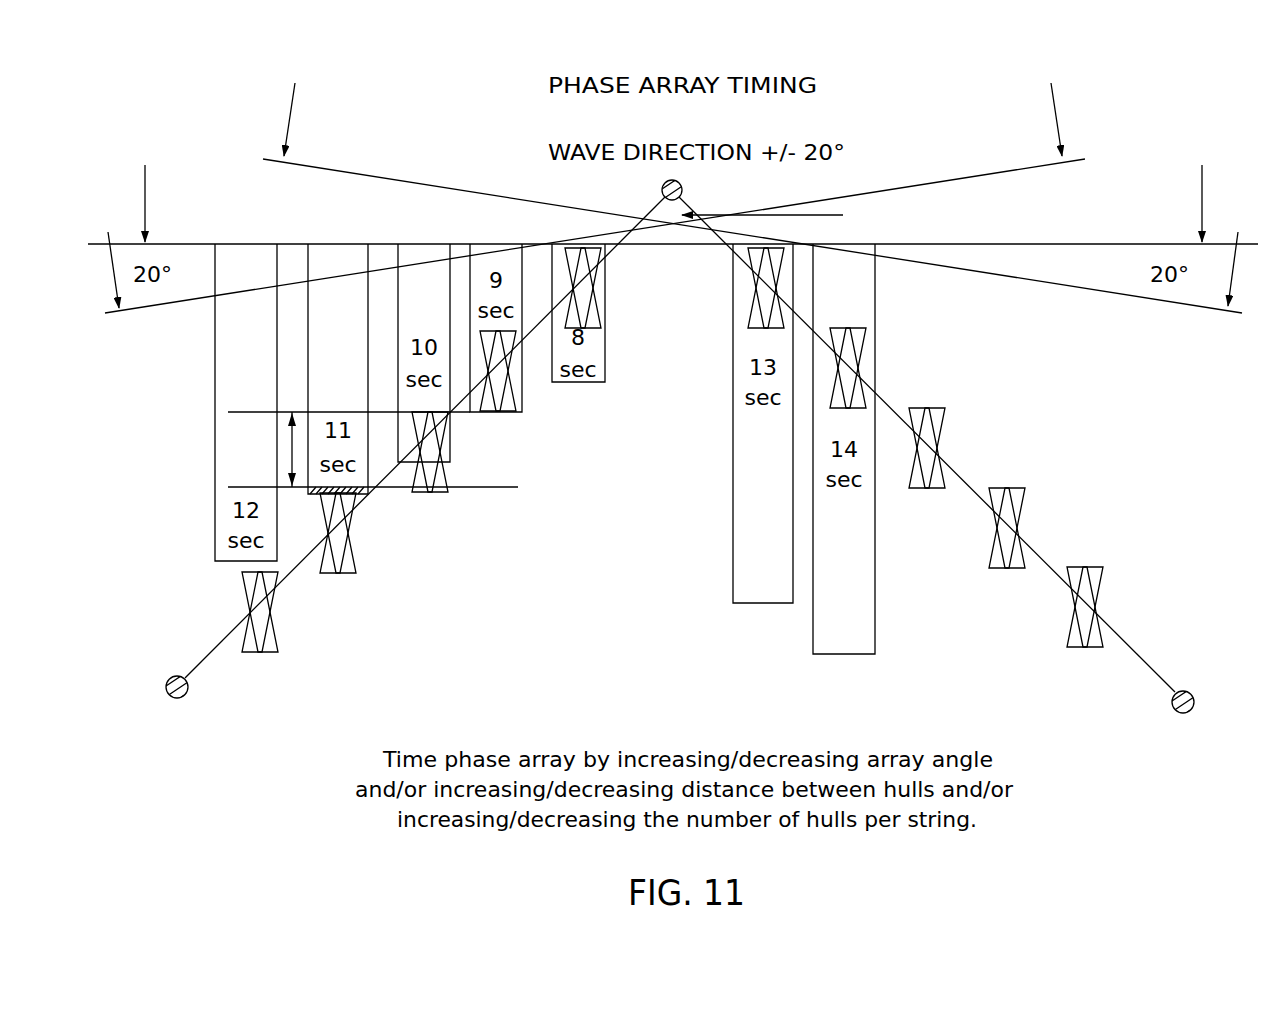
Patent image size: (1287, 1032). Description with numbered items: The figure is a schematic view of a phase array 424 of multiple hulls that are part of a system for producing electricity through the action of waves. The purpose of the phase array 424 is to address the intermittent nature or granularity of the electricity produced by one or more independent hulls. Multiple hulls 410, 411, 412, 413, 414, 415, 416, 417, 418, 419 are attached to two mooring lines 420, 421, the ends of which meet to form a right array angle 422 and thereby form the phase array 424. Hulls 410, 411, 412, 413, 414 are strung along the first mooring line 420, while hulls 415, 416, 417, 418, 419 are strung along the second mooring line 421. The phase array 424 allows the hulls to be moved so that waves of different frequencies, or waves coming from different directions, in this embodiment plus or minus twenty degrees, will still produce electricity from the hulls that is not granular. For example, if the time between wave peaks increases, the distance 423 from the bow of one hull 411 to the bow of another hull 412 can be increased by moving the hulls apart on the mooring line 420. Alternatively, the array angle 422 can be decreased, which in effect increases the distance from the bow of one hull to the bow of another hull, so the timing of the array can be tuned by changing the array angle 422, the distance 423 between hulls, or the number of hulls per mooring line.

The hull 410 is at (282, 612).
The hull 411 is at (362, 533).
The hull 412 is at (456, 452).
The hull 413 is at (494, 387).
The hull 414 is at (579, 329).
The hull 415 is at (733, 288).
The hull 416 is at (877, 368).
The hull 417 is at (956, 448).
The hull 418 is at (1035, 528).
The hull 419 is at (1113, 607).
The mooring line 420 is at (200, 684).
The mooring line 421 is at (1154, 699).
The array angle 422 is at (1095, 218).
The distance 423 is at (286, 446).
The phase array 424 is at (590, 195).